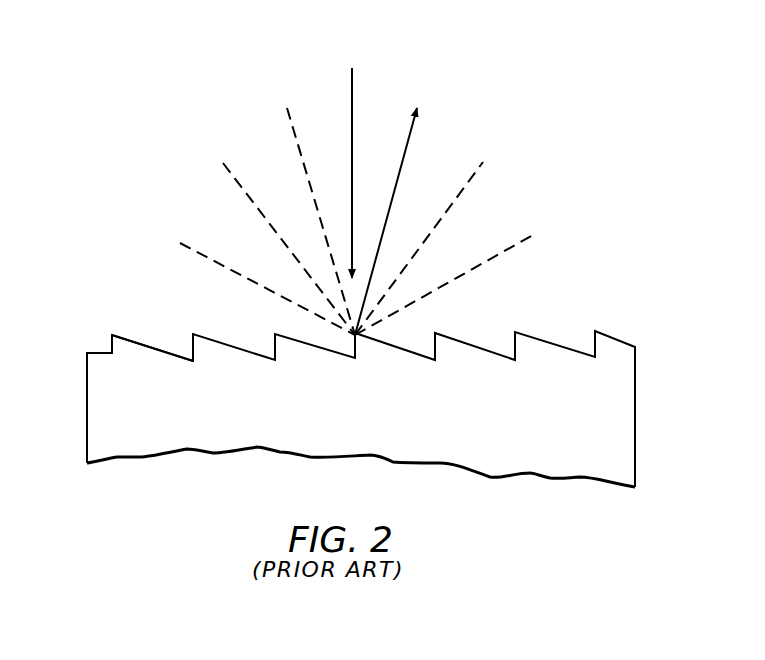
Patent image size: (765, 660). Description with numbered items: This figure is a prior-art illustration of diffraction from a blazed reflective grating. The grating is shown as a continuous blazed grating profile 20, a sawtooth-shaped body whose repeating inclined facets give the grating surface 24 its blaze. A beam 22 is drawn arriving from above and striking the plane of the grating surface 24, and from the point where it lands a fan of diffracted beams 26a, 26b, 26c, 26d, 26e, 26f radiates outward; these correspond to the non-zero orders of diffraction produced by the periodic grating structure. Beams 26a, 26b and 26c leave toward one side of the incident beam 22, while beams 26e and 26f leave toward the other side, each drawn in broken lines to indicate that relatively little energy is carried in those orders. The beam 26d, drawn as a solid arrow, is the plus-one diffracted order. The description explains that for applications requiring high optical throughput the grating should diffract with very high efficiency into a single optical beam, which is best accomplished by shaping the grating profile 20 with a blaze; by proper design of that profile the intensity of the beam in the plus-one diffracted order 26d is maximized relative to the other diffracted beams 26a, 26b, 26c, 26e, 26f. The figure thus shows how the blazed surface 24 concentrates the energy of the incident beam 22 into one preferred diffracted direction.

The continuous blazed grating profile 20 is at (108, 350).
The beam 22 is at (352, 92).
The grating surface 24 is at (152, 362).
The diffracted beam 26a is at (202, 255).
The diffracted beam 26b is at (238, 188).
The diffracted beam 26c is at (290, 130).
The +1 diffracted order beam 26d is at (408, 150).
The diffracted beam 26e is at (467, 187).
The diffracted beam 26f is at (495, 257).